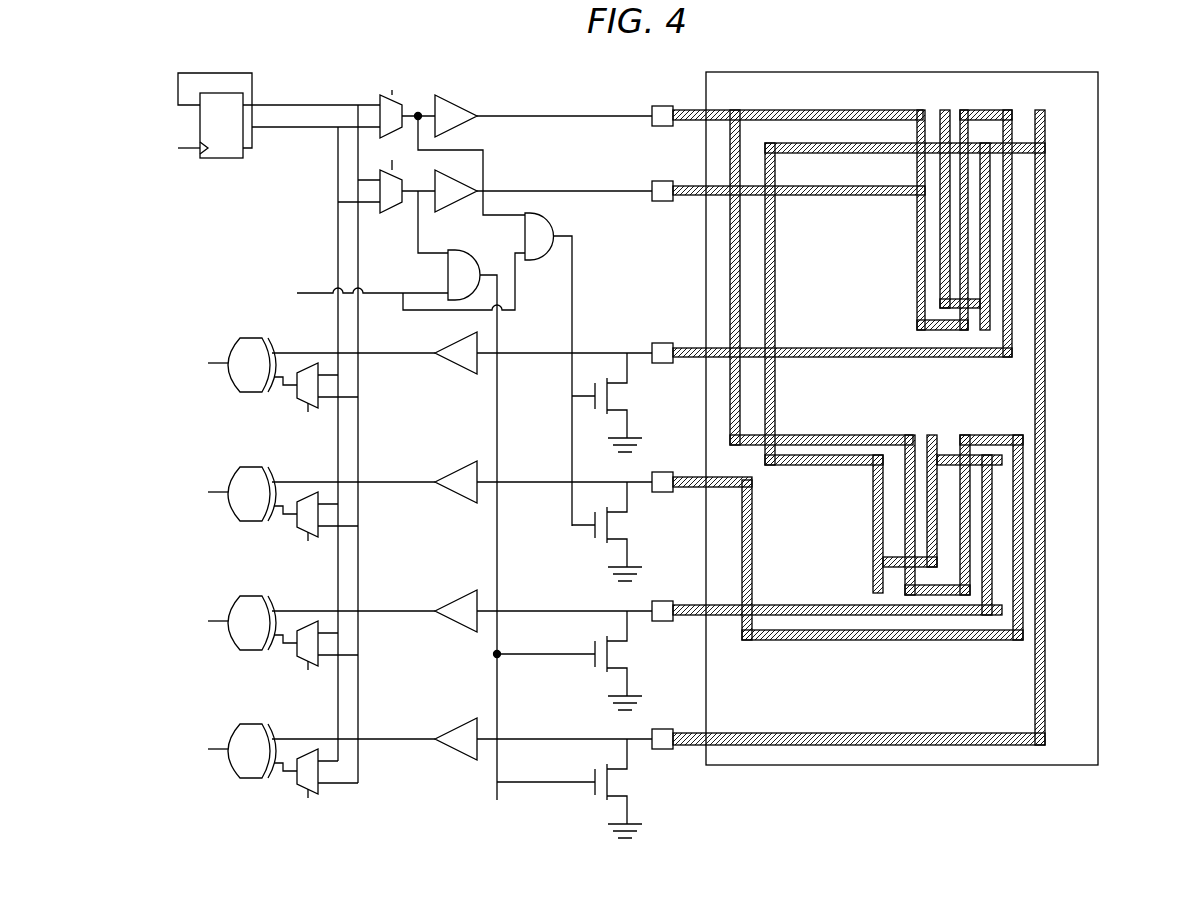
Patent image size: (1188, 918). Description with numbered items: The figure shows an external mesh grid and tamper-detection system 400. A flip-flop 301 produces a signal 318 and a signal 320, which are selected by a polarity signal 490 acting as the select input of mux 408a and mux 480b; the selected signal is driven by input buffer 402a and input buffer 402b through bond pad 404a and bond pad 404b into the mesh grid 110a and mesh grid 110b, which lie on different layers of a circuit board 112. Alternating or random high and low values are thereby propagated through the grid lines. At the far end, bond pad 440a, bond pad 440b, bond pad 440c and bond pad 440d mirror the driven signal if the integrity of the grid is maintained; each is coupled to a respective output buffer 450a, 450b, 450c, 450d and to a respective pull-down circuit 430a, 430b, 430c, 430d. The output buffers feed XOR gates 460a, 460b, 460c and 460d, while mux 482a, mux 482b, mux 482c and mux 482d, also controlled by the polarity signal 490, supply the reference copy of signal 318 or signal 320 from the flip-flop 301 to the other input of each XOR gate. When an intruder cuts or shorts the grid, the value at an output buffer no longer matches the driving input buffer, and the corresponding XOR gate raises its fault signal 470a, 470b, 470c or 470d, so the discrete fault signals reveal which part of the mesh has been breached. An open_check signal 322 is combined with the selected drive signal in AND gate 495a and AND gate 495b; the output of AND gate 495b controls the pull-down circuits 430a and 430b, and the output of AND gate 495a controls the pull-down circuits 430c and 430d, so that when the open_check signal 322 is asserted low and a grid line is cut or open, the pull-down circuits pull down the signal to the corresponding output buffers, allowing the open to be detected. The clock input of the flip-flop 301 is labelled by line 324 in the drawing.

The external mesh grid system and tamper-detection system 400 is at (117, 66).
The flip-flop 301 is at (232, 160).
The toggle grid clock input 324 is at (188, 150).
The signal 318 is at (312, 104).
The signal 320 is at (272, 126).
The open_check signal 322 is at (310, 292).
The multiplexer 408a is at (400, 100).
The mux 480b is at (390, 209).
The polarity signal 490 is at (392, 90).
The input buffer 402a is at (455, 100).
The input buffer 402b is at (450, 212).
The bond pad 404a is at (655, 105).
The bond pad 404b is at (655, 180).
The AND gate 495a is at (448, 290).
The AND gate 495b is at (553, 225).
The XOR gate 460a is at (230, 380).
The XOR gate 460b is at (230, 509).
The XOR gate 460c is at (230, 638).
The XOR gate 460d is at (230, 766).
The fault signal 470a is at (218, 362).
The fault signal 470b is at (218, 491).
The fault signal 470c is at (218, 620).
The fault signal 470d is at (218, 748).
The mux 482a is at (297, 393).
The mux 482b is at (297, 522).
The mux 482c is at (297, 651).
The mux 482d is at (297, 779).
The output buffer 450a is at (455, 367).
The output buffer 450b is at (455, 496).
The output buffer 450c is at (455, 625).
The output buffer 450d is at (455, 753).
The pull-down circuit 430a is at (618, 397).
The pull-down circuit 430b is at (618, 526).
The pull-down circuit 430c is at (618, 655).
The pull-down circuit 430d is at (618, 783).
The bond pad 440a is at (658, 343).
The bond pad 440b is at (660, 471).
The bond pad 440c is at (660, 600).
The bond pad 440d is at (660, 728).
The mesh grid 110a is at (836, 110).
The mesh grid 110b is at (1047, 697).
The circuit board 112 is at (835, 766).